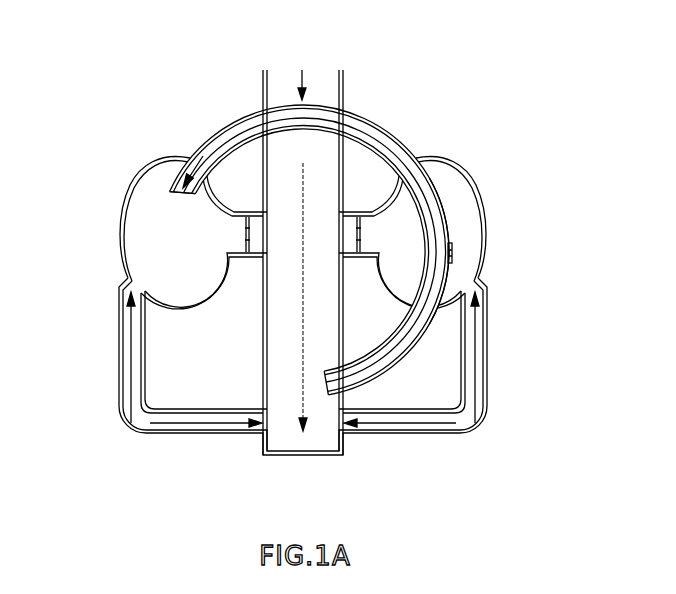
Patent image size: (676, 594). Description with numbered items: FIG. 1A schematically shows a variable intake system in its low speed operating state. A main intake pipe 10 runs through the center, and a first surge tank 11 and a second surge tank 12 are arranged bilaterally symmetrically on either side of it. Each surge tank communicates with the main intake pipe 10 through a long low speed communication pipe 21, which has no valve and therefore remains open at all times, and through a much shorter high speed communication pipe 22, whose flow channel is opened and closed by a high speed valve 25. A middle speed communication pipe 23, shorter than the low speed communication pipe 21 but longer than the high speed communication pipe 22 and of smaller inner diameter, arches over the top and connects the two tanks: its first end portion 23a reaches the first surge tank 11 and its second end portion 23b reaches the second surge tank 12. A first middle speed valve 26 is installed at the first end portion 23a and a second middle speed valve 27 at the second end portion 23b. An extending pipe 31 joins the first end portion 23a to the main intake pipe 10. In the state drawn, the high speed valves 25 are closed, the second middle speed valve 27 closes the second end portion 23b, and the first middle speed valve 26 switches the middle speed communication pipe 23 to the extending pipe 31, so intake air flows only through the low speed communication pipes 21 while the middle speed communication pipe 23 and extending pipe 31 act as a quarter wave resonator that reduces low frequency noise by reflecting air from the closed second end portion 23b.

The main intake pipe 10 is at (344, 92).
The first surge tank 11 is at (490, 231).
The second surge tank 12 is at (118, 231).
The low speed communication pipe 21 is at (210, 437).
The high speed communication pipe 22 is at (246, 259).
The middle speed communication pipe 23 is at (241, 116).
The first end portion 23a is at (434, 192).
The second end portion 23b is at (178, 180).
The high speed valve 25 is at (245, 218).
The first middle speed valve 26 is at (455, 252).
The second middle speed valve 27 is at (168, 200).
The extending pipe 31 is at (395, 370).